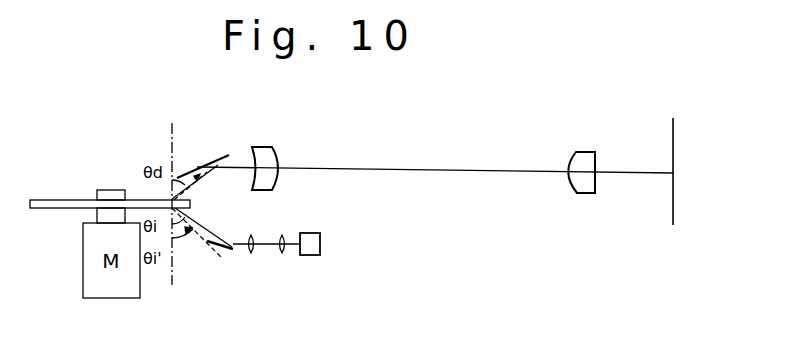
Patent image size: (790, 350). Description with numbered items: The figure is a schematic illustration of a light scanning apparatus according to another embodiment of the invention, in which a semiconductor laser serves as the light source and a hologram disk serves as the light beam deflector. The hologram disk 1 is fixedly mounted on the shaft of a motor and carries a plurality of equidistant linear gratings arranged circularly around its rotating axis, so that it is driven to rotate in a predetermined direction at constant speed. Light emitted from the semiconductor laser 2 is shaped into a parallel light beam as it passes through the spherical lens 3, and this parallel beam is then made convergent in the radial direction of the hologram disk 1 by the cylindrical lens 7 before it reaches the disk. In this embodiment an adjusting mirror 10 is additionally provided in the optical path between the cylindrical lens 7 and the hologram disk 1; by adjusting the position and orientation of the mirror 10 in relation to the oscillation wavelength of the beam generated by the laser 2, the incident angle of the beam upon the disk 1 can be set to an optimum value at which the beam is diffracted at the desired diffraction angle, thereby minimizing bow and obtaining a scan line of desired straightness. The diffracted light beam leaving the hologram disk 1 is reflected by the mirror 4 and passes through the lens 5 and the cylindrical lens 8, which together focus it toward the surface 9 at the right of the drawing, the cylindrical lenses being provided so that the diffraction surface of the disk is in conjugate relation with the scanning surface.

The hologram disk 1 is at (50, 200).
The semiconductor laser light source 2 is at (307, 233).
The spherical lens 3 is at (282, 255).
The mirror 4 is at (198, 166).
The lens 5 is at (262, 146).
The cylindrical lens 7 is at (251, 255).
The cylindrical lens 8 is at (581, 151).
The observation plane 9 is at (673, 158).
The adjusting mirror 10 is at (228, 251).